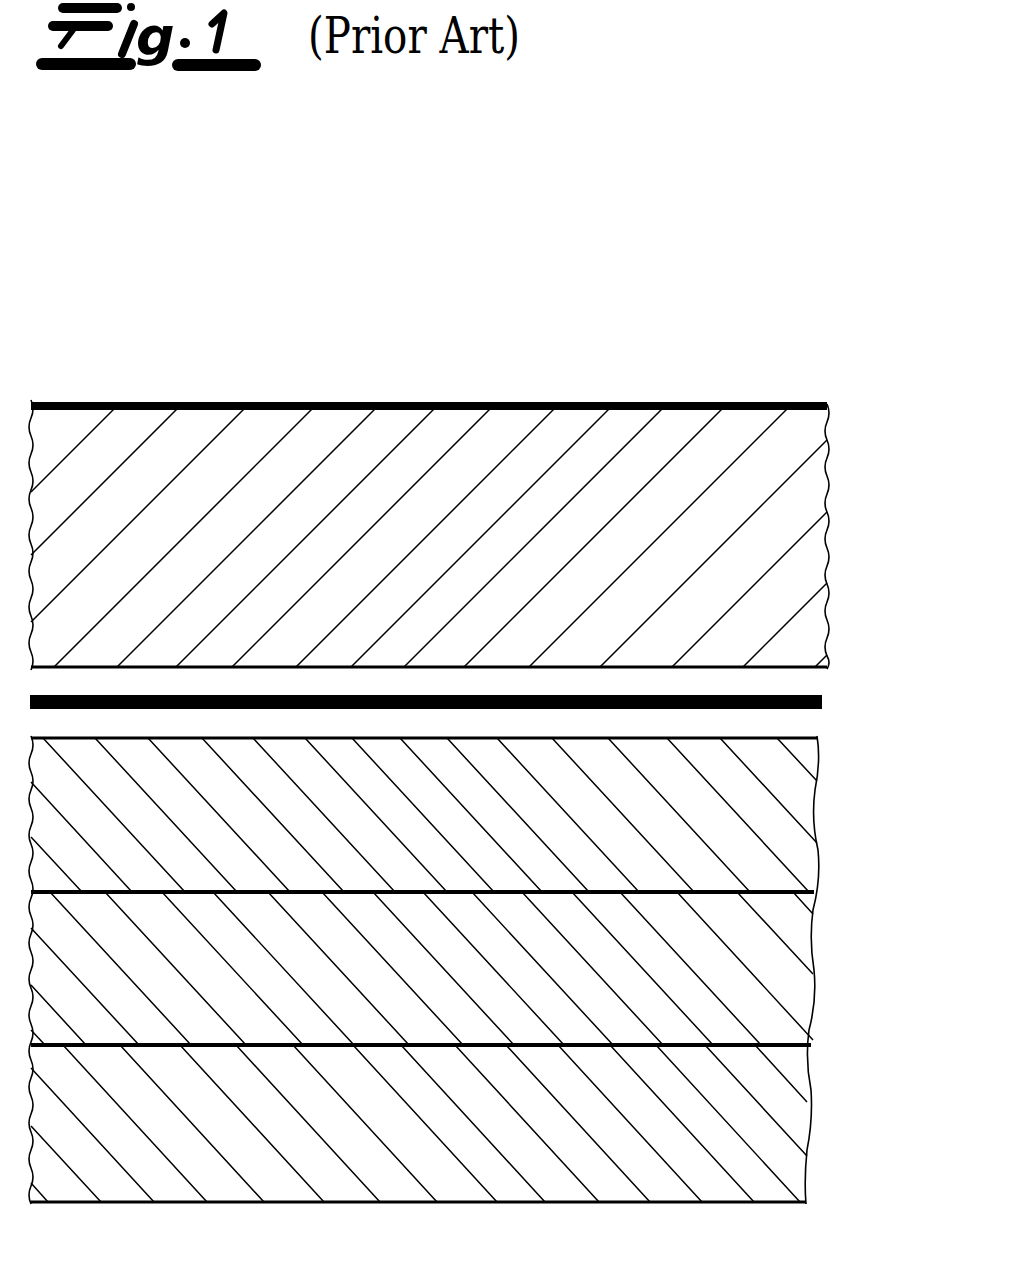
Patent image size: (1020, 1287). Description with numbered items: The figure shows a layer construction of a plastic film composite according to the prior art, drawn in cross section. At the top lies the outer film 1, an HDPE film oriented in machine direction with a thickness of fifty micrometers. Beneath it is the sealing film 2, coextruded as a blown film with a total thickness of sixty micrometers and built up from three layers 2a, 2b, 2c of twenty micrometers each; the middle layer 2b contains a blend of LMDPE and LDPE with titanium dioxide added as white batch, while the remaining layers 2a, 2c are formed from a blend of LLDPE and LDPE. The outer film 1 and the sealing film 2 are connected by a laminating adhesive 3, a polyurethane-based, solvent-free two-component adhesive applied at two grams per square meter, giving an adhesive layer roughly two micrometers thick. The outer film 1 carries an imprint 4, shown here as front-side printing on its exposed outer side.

The outer film 1 is at (803, 503).
The sealing film 2 is at (478, 970).
The layer of the sealing film 2a is at (808, 812).
The layer of the sealing film 2b is at (793, 965).
The layer of the sealing film 2c is at (450, 1123).
The laminating adhesive 3 is at (822, 700).
The imprint 4 is at (565, 406).